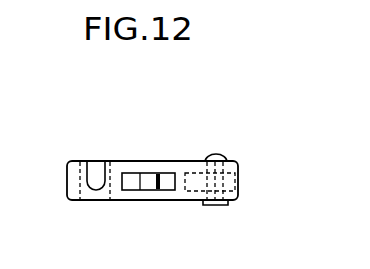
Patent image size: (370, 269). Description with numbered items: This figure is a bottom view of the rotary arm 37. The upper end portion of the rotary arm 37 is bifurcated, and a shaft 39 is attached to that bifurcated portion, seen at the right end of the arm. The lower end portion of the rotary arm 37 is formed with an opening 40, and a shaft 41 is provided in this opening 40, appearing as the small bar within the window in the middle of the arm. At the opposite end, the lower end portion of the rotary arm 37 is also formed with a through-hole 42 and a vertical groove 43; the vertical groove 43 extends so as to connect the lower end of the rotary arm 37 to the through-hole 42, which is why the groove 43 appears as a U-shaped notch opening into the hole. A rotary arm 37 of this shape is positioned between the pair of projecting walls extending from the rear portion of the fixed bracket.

The rotary arm 37 is at (115, 136).
The shaft 39 is at (242, 190).
The opening 40 is at (165, 176).
The shaft 41 is at (156, 187).
The through-hole 42 is at (74, 202).
The vertical groove 43 is at (92, 178).